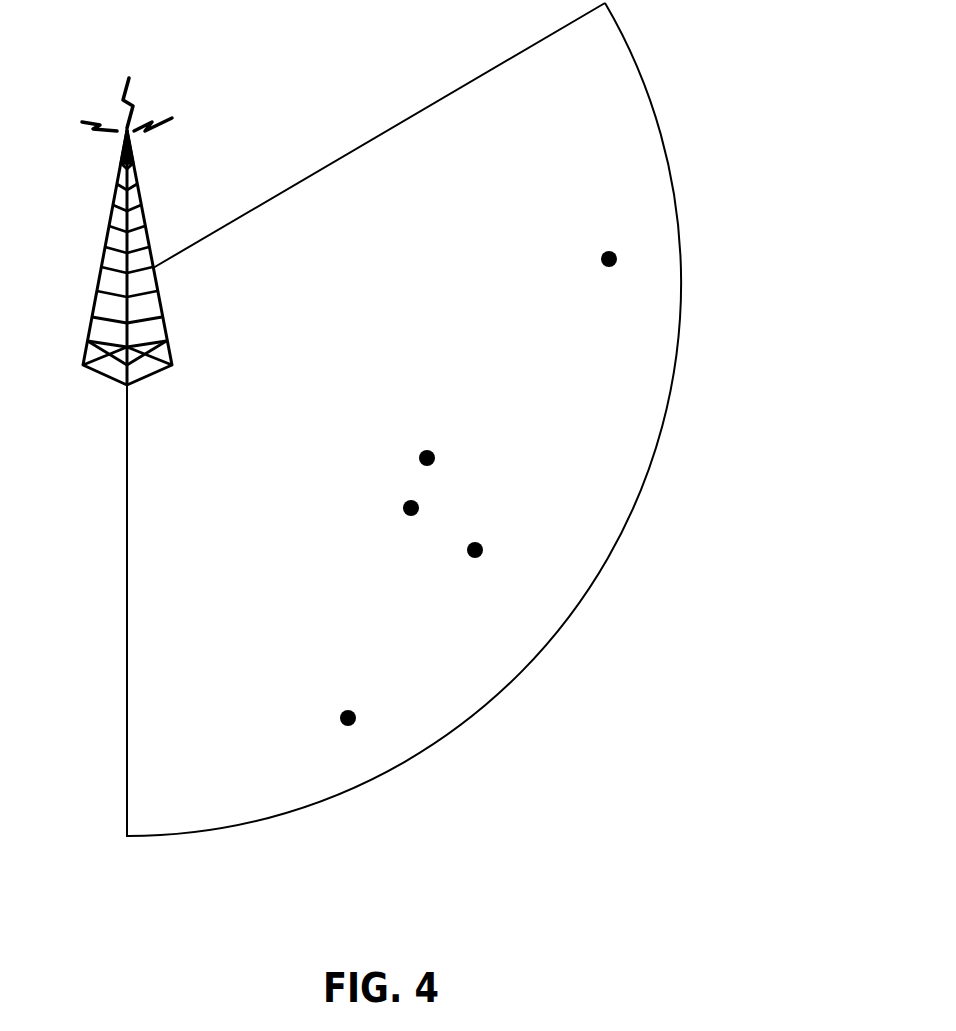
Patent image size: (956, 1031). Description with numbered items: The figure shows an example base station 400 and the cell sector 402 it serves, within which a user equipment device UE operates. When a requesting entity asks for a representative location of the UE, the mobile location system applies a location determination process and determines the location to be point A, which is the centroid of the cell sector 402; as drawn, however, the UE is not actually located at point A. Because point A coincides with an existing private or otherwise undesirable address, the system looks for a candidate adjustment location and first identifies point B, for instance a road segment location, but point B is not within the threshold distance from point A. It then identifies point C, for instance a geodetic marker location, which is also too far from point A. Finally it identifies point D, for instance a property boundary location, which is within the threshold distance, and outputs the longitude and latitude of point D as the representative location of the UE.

The base station 400 is at (105, 377).
The cell sector 402 is at (676, 356).
The point A is at (427, 445).
The point B is at (609, 245).
The point C is at (348, 704).
The point D is at (475, 537).
The user equipment device UE is at (412, 496).